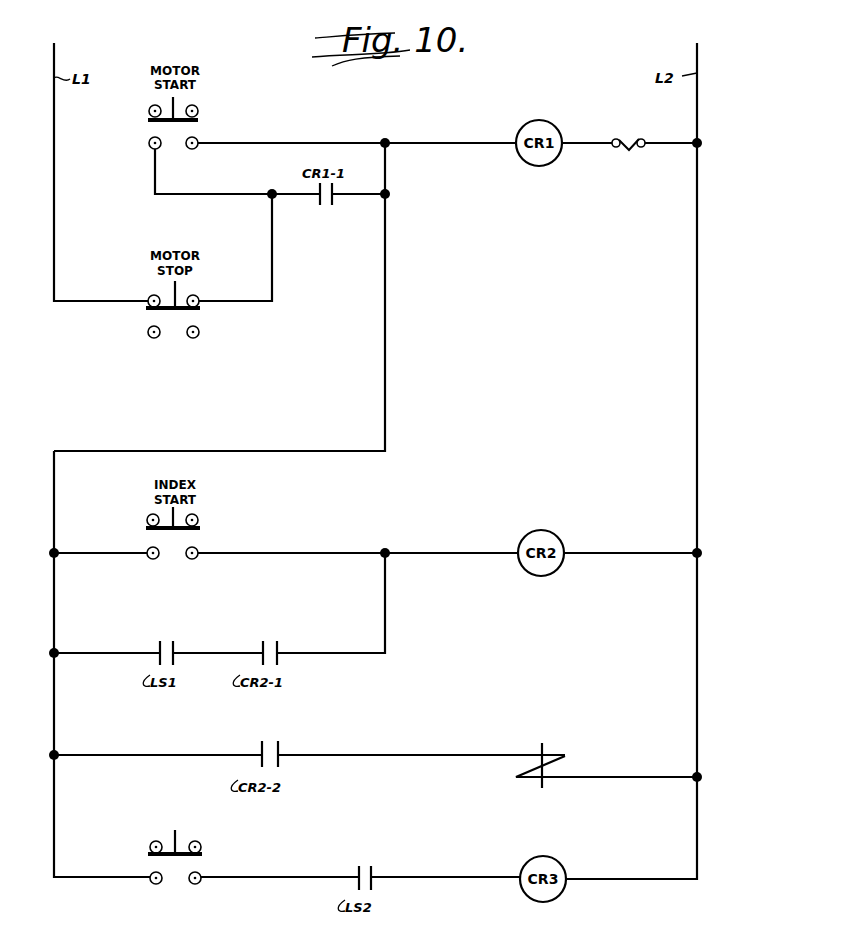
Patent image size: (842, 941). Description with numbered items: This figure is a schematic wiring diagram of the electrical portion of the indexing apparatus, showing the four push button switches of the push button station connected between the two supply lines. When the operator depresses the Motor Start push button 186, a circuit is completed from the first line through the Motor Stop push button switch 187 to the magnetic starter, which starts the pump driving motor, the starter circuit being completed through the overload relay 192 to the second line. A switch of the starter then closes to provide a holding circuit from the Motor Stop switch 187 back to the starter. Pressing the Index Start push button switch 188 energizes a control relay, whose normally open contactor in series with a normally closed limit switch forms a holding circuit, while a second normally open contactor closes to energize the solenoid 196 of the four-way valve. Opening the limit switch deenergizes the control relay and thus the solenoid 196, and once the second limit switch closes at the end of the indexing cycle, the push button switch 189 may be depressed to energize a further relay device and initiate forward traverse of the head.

The Motor Start push button 186 is at (176, 101).
The Motor Stop push button switch 187 is at (182, 290).
The Index Start push button switch 188 is at (178, 511).
The push button switch 189 is at (183, 845).
The overload relay 192 is at (636, 136).
The solenoid 196 is at (553, 752).